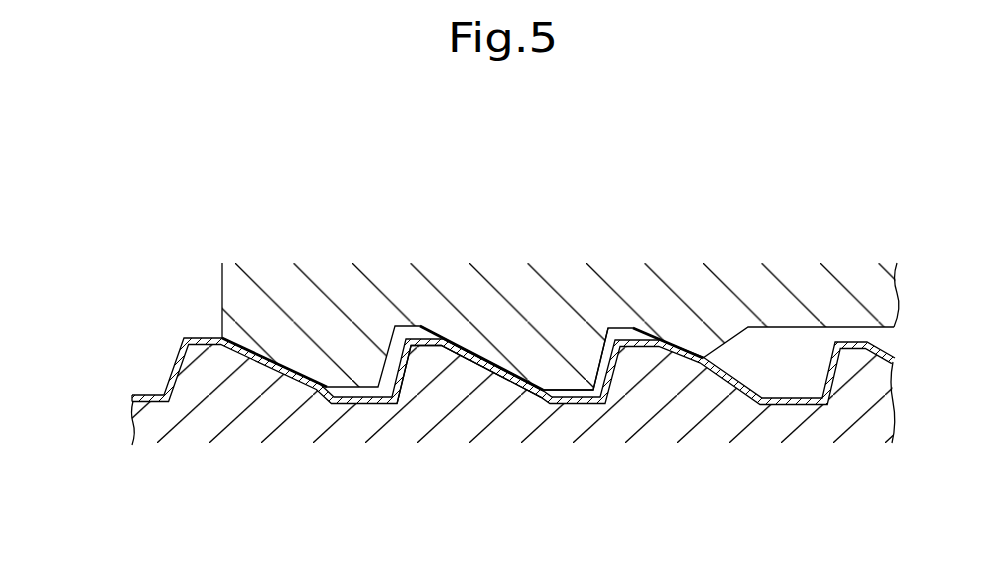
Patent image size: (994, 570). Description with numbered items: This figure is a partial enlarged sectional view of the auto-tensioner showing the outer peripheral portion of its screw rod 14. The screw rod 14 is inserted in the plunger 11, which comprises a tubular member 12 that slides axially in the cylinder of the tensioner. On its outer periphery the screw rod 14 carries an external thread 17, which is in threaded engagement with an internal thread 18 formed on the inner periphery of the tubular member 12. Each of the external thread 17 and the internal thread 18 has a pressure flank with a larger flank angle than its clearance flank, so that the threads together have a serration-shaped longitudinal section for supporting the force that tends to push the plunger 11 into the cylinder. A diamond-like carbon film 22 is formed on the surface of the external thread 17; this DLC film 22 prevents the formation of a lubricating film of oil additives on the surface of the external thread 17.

The plunger 11 is at (232, 293).
The tubular member 12 is at (475, 319).
The screw rod 14 is at (148, 421).
The external thread 17 is at (430, 357).
The internal thread 18 is at (548, 377).
The diamond-like carbon film 22 is at (148, 397).